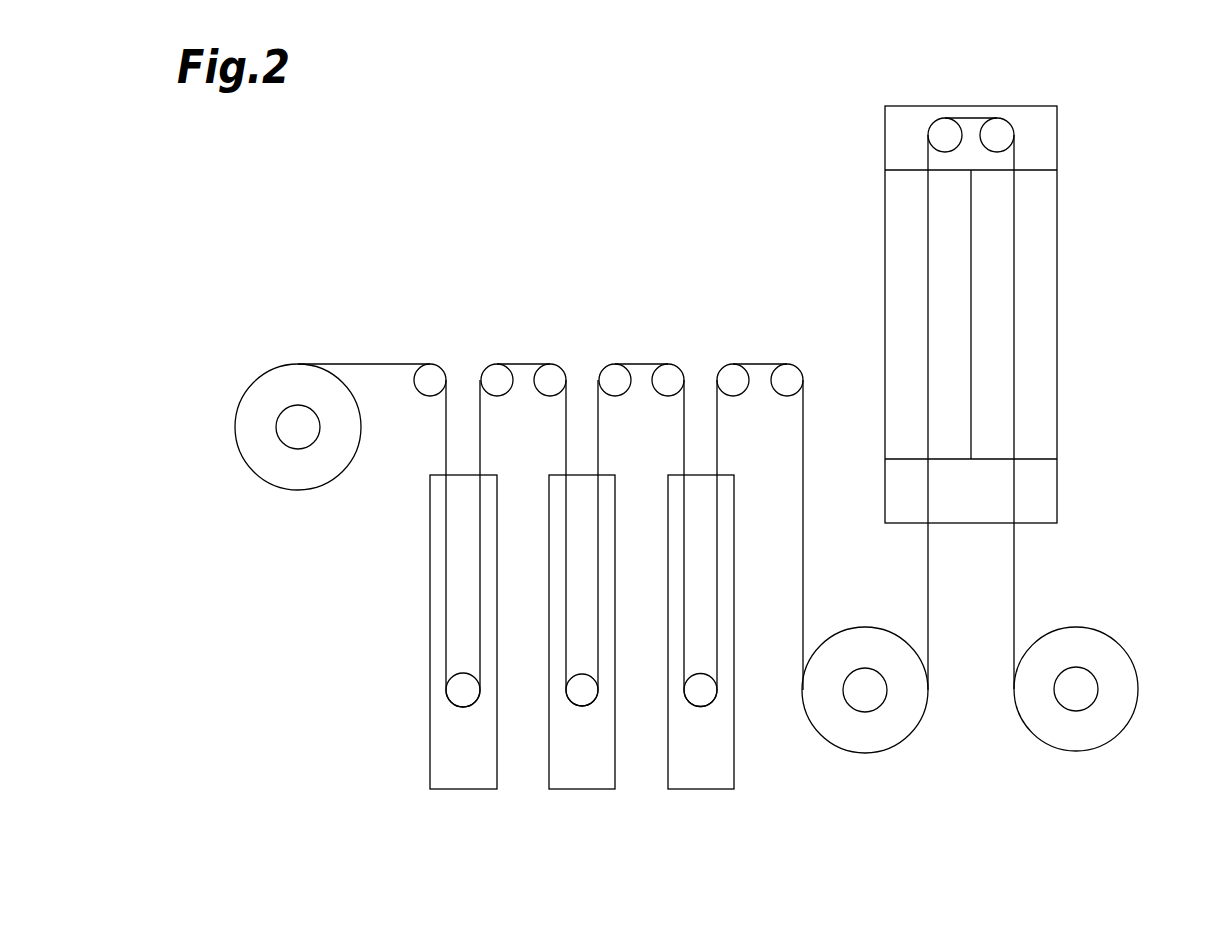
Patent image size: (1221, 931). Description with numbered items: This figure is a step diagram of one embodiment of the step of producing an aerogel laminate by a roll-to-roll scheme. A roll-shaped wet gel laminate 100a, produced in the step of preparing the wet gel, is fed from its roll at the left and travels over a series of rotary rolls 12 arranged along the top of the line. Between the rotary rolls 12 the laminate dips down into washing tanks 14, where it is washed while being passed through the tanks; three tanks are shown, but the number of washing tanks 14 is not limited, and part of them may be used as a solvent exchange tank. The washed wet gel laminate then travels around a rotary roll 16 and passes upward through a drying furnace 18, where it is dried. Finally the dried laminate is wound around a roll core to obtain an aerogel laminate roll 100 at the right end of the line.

The roll-shaped wet gel laminate 100a is at (258, 377).
The rotary rolls 12 is at (427, 364).
The washing tanks 14 is at (463, 789).
The rotary roll 16 is at (823, 732).
The drying furnace 18 is at (1057, 153).
The aerogel laminate roll 100 is at (1111, 634).